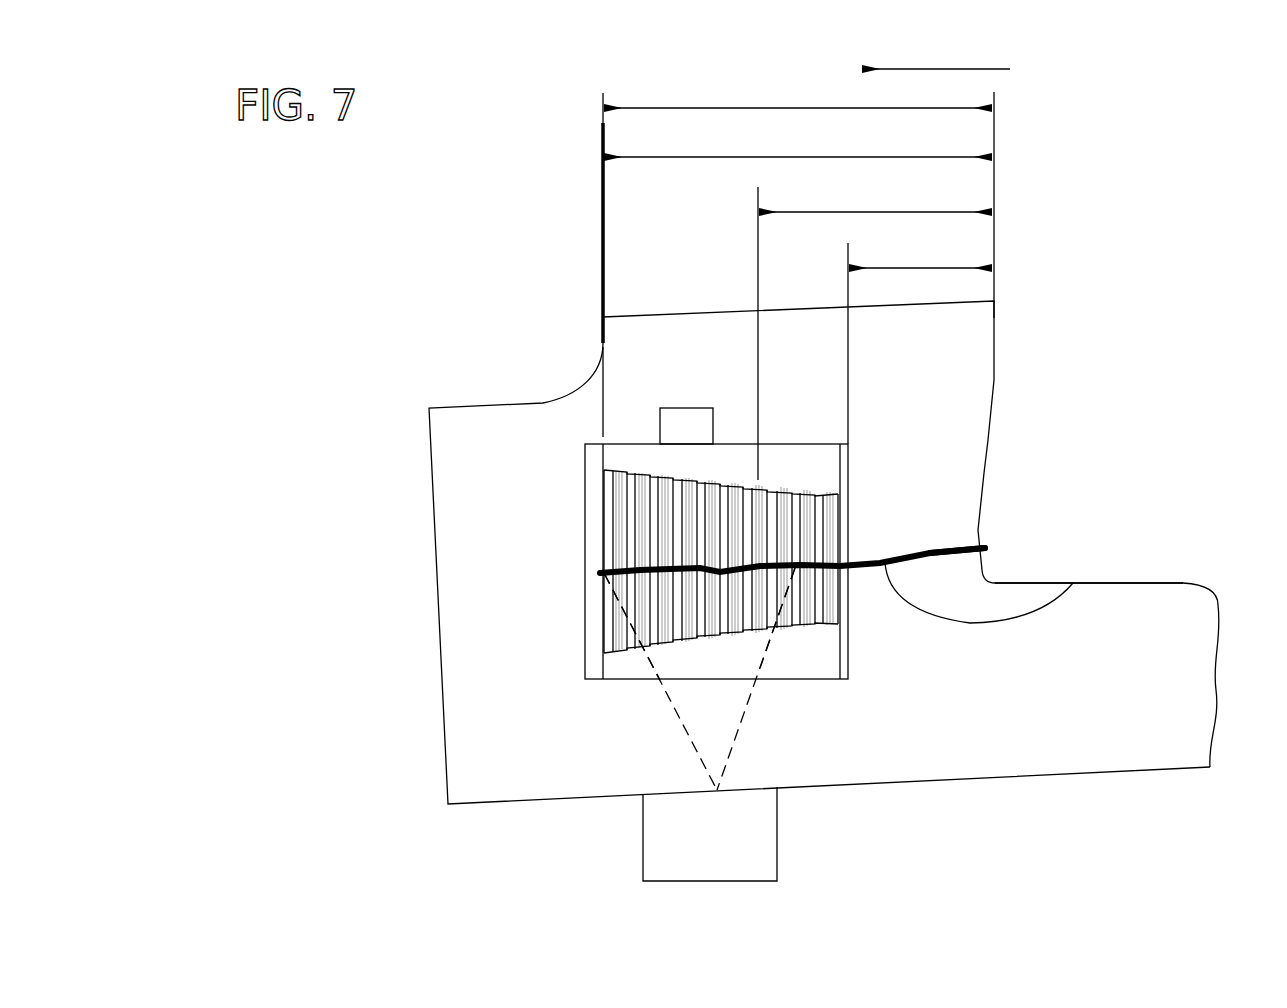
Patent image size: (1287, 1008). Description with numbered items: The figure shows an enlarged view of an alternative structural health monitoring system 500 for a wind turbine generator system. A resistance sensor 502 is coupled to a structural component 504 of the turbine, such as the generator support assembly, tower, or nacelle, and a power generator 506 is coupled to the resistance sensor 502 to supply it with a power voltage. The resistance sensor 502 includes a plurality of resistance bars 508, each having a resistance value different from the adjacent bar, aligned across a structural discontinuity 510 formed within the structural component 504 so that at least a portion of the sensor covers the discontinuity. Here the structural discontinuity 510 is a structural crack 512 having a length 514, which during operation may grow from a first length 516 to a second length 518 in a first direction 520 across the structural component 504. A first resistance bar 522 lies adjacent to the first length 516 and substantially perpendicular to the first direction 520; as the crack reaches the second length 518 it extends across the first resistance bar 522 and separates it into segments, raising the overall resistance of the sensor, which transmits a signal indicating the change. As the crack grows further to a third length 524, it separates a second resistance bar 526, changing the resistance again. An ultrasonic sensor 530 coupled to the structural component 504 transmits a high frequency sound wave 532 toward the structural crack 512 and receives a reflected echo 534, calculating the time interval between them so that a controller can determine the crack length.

The structural health monitoring system 500 is at (523, 245).
The resistance sensor 502 is at (820, 445).
The structural component 504 is at (984, 473).
The power generator 506 is at (672, 408).
The resistance bar 508 is at (835, 505).
The structural discontinuity 510 is at (943, 555).
The structural crack 512 is at (1063, 584).
The length 514 is at (652, 108).
The first length 516 is at (880, 268).
The second length 518 is at (840, 212).
The first direction 520 is at (948, 70).
The first resistance bar 522 is at (827, 543).
The third length 524 is at (738, 157).
The second resistance bar 526 is at (765, 493).
The ultrasonic sensor 530 is at (777, 832).
The high frequency sound wave 532 is at (667, 700).
The echo 534 is at (686, 737).